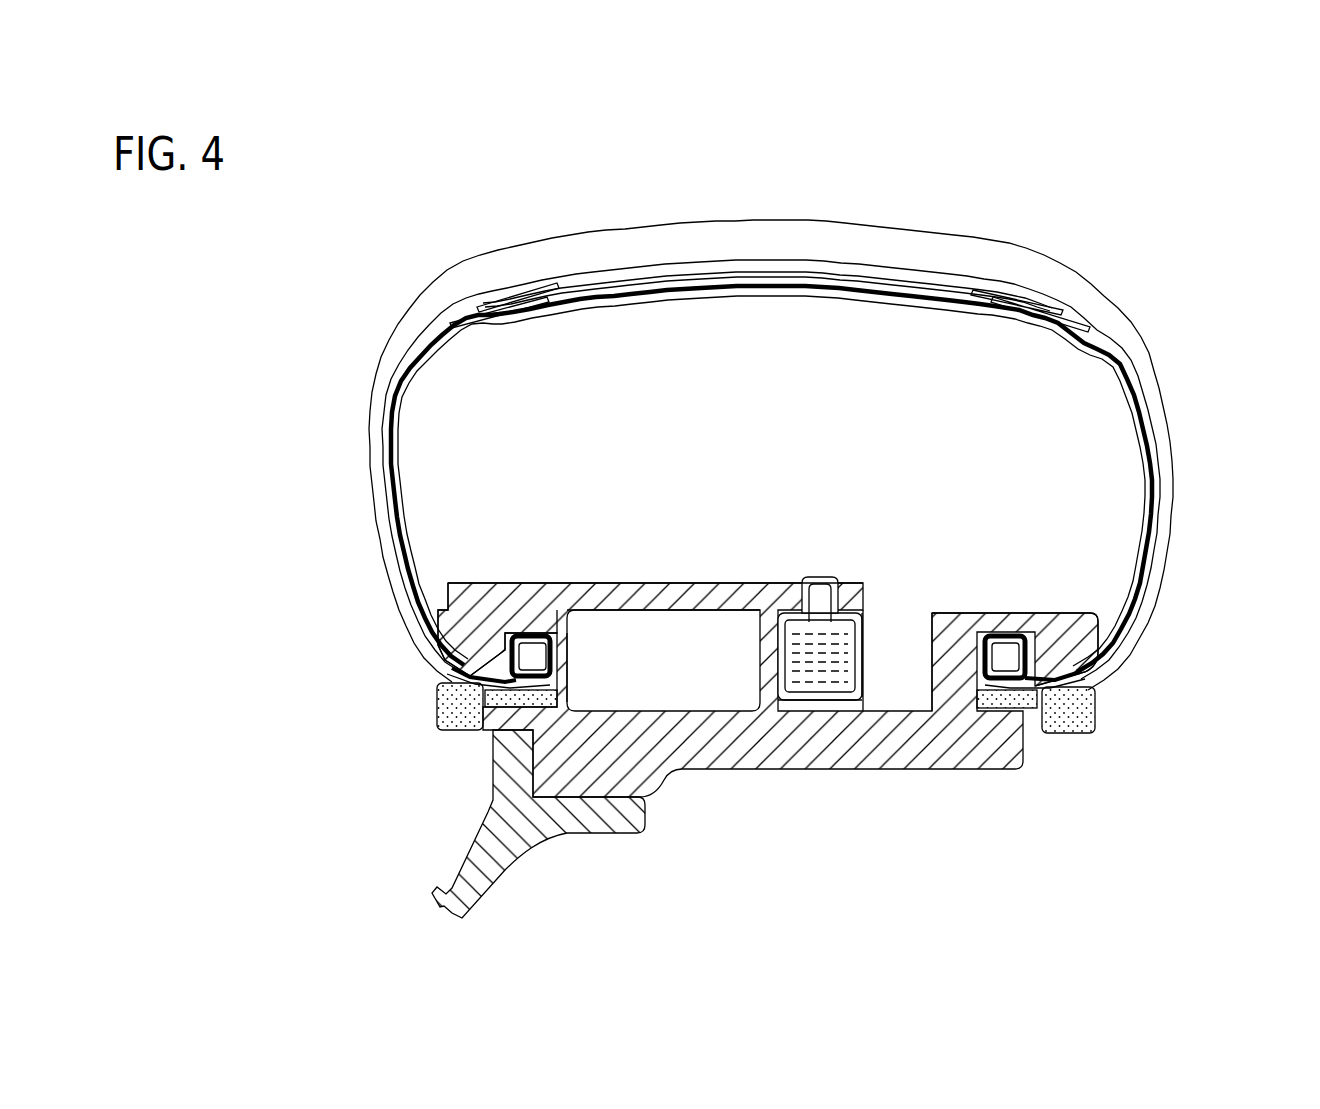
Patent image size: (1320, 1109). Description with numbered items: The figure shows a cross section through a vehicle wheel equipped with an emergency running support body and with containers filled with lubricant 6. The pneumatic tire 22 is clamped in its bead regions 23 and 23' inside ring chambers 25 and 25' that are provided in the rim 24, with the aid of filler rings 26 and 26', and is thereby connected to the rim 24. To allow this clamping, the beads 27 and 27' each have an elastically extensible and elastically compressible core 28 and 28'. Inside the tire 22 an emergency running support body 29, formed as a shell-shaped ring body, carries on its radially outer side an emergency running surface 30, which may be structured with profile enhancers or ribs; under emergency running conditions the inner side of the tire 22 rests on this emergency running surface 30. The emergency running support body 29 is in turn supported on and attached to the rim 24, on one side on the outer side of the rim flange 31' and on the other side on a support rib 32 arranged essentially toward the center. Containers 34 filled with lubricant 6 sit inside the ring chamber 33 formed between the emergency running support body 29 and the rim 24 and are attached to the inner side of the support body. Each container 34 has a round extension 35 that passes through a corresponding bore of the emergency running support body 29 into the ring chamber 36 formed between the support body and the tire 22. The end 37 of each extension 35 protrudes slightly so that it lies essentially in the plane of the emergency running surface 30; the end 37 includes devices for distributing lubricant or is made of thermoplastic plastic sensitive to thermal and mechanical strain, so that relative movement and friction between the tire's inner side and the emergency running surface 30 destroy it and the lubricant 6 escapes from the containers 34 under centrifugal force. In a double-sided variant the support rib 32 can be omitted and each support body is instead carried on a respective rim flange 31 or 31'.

The lubricant 6 is at (822, 668).
The pneumatic tire 22 is at (1152, 373).
The bead region 23 is at (1017, 775).
The bead region 23' is at (444, 760).
The rim 24 is at (718, 775).
The ring chamber 25 is at (897, 639).
The ring chamber 25' is at (612, 666).
The filler ring 26 is at (990, 775).
The filler ring 26' is at (379, 718).
The bead 27 is at (1035, 525).
The bead 27' is at (498, 536).
The core 28 is at (961, 580).
The core 28' is at (540, 535).
The emergency running support body 29 is at (657, 598).
The emergency running surface 30 is at (583, 583).
The rim flange 31 is at (1102, 686).
The rim flange 31' is at (419, 630).
The support rib 32 is at (777, 662).
The ring chamber 33 is at (882, 640).
The container 34 is at (872, 674).
The round extension 35 is at (840, 603).
The ring chamber 36 is at (663, 470).
The end 37 is at (814, 577).